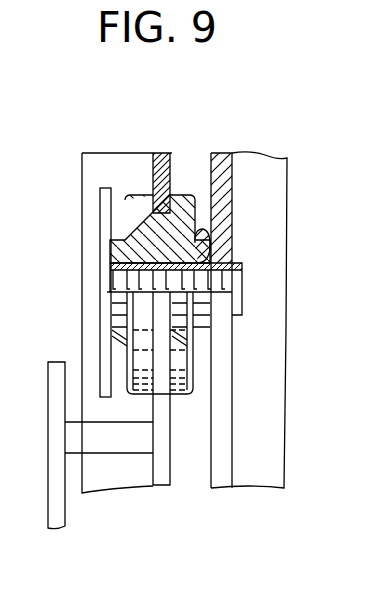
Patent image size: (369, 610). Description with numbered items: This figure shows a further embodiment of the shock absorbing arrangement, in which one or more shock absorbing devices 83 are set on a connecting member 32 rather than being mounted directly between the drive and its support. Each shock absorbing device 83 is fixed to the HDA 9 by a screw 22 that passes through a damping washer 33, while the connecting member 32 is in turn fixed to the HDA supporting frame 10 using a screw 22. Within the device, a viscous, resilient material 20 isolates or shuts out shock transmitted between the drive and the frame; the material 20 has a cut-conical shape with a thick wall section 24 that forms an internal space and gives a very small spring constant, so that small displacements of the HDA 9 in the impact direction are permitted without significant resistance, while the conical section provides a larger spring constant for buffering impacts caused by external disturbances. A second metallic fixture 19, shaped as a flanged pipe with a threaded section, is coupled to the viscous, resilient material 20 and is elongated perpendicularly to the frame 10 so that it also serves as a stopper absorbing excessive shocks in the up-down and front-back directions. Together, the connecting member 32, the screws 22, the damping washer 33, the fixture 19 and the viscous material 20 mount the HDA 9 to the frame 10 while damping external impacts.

The HDA 9 is at (258, 478).
The HDA supporting frame 10 is at (64, 497).
The second metallic fixture 19 is at (195, 240).
The viscous, resilient material 20 is at (131, 198).
The screw 22 is at (98, 262).
The thick wall section 24 is at (163, 236).
The connecting member 32 is at (170, 465).
The damping washer 33 is at (110, 247).
The shock absorbing device 83 is at (187, 395).